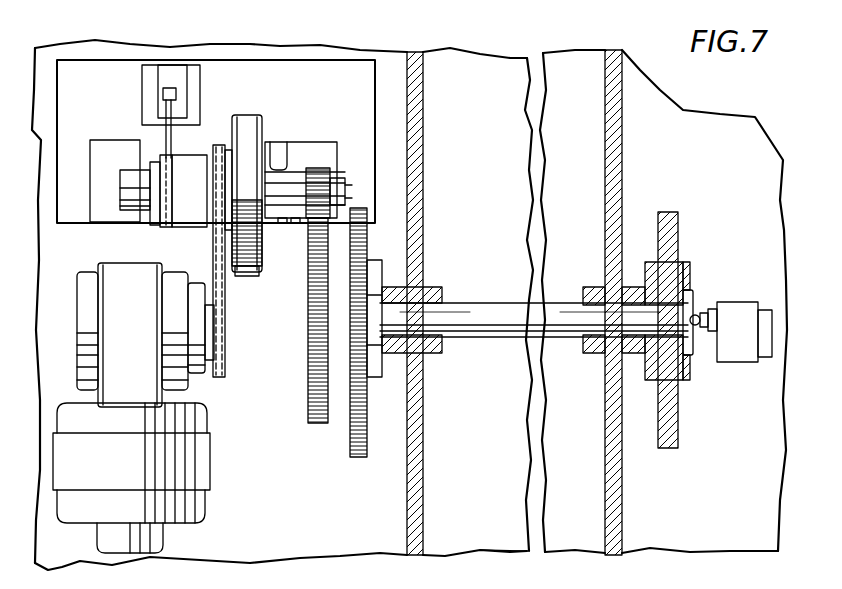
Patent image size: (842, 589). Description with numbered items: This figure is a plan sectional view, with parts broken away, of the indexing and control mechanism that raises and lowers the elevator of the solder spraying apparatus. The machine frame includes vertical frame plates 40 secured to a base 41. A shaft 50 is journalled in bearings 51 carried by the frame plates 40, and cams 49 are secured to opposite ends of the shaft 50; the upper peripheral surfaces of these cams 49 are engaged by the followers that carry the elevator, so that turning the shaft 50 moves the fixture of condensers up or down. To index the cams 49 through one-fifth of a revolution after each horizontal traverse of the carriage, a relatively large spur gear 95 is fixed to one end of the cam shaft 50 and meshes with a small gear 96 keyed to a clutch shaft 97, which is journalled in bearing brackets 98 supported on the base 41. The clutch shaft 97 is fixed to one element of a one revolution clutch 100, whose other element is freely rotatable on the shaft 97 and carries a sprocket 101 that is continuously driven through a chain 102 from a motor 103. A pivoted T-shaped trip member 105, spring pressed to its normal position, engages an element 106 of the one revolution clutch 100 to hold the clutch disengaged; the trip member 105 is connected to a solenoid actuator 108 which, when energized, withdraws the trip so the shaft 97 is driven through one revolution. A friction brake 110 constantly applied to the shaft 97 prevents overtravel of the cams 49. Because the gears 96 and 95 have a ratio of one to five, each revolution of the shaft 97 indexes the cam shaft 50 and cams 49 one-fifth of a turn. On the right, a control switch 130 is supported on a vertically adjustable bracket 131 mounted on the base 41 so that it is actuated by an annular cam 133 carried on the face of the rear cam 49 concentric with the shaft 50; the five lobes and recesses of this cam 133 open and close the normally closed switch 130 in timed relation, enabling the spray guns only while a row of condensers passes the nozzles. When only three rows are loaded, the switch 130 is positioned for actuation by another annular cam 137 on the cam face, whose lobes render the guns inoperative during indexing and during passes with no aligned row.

The vertical frame plate 40 is at (420, 107).
The base 41 is at (505, 543).
The cam 49 is at (357, 405).
The shaft 50 is at (497, 338).
The bearing 51 is at (442, 290).
The spur gear 95 is at (316, 362).
The small gear 96 is at (318, 170).
The clutch shaft 97 is at (340, 178).
The bearing bracket 98 is at (130, 205).
The one revolution clutch 100 is at (209, 122).
The sprocket 101 is at (224, 135).
The chain 102 is at (225, 296).
The motor 103 is at (210, 457).
The trip member 105 is at (163, 128).
The element of the one revolution clutch 106 is at (165, 157).
The solenoid actuator 108 is at (160, 78).
The friction brake 110 is at (252, 274).
The control switch 130 is at (737, 345).
The vertically adjustable bracket 131 is at (768, 310).
The annular cam 133 is at (687, 268).
The annular cam 137 is at (693, 280).